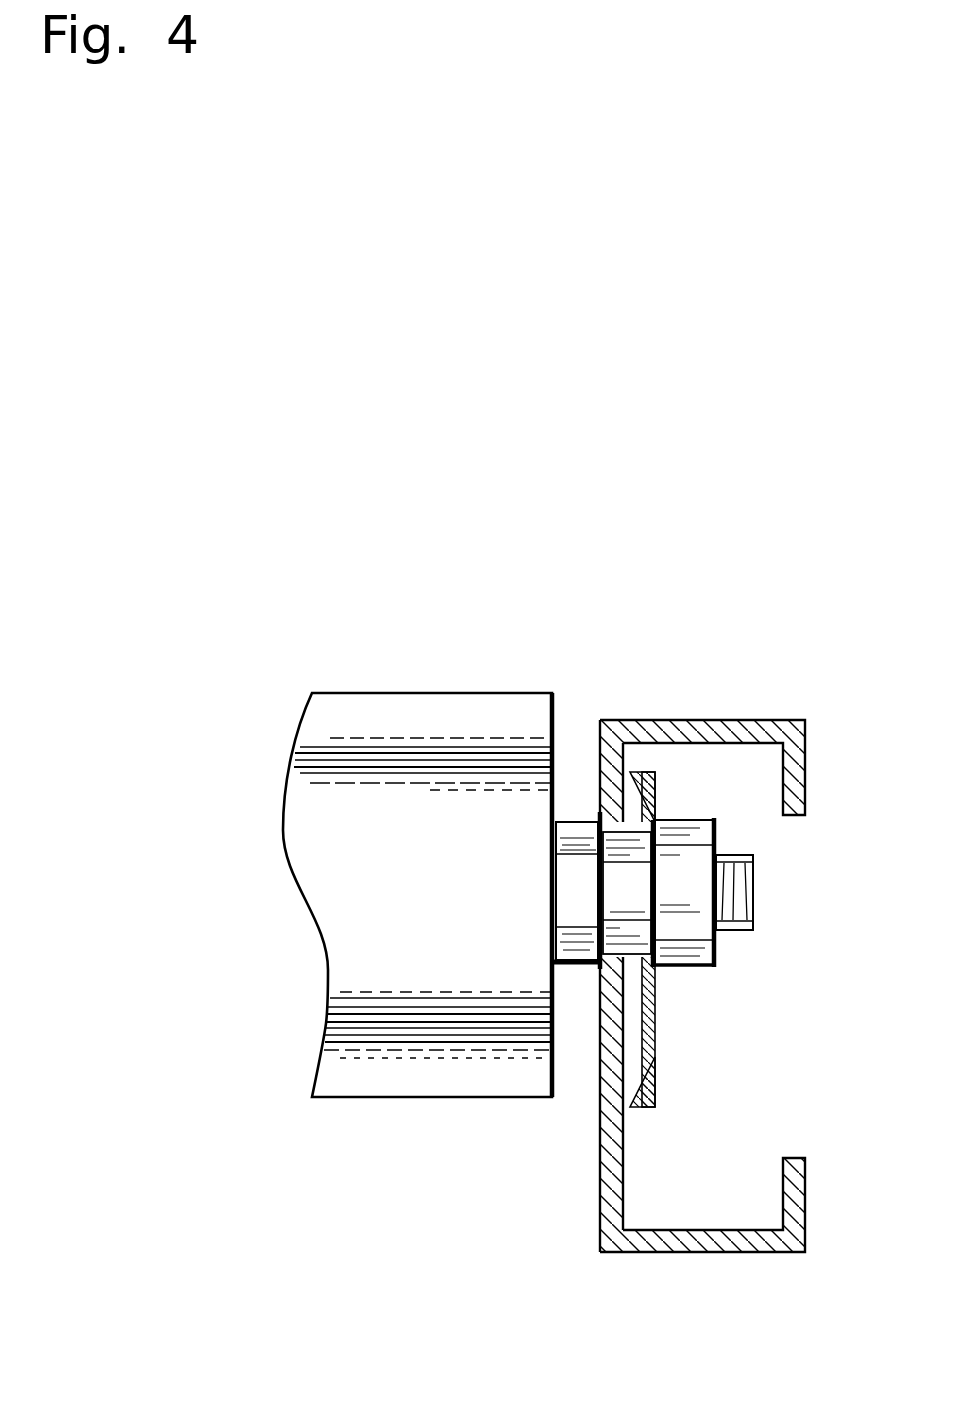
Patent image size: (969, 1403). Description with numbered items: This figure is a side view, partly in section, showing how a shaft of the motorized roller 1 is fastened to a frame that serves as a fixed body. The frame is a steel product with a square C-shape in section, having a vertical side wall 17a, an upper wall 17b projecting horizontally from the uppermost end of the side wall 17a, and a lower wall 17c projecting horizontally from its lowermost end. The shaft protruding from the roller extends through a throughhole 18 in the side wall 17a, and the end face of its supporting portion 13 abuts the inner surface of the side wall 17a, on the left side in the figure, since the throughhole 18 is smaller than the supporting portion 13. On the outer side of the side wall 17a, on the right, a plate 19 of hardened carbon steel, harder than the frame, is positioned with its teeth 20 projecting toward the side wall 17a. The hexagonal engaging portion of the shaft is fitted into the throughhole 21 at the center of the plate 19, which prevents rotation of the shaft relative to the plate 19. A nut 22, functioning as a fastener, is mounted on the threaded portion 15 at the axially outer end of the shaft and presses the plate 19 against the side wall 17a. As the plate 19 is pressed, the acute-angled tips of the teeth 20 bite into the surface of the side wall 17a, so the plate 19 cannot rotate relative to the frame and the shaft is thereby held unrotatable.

The motorized roller 1 is at (463, 691).
The supporting portion 13 is at (572, 833).
The threaded portion 15 is at (753, 902).
The side wall 17a is at (600, 1190).
The upper wall 17b is at (775, 722).
The lower wall 17c is at (708, 1247).
The throughhole 18 is at (603, 958).
The plate 19 is at (655, 1065).
The teeth 20 is at (655, 774).
The throughhole 21 is at (680, 967).
The nut 22 is at (717, 958).